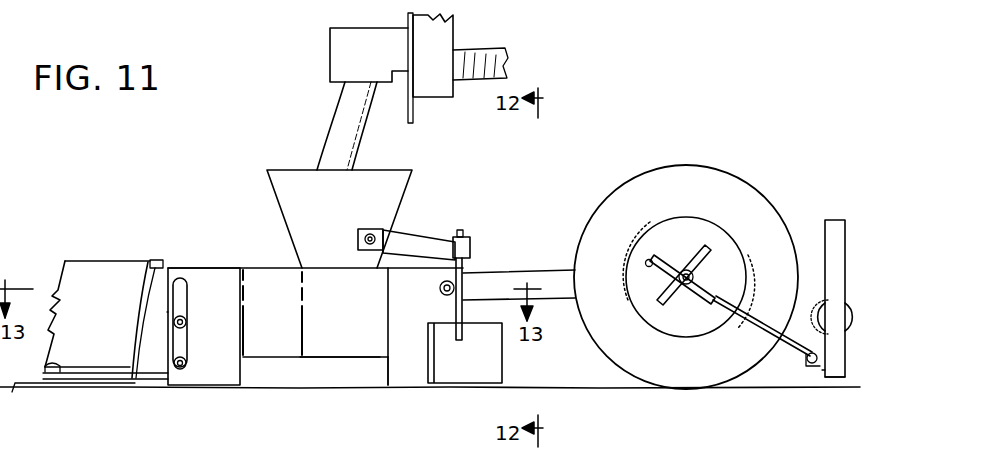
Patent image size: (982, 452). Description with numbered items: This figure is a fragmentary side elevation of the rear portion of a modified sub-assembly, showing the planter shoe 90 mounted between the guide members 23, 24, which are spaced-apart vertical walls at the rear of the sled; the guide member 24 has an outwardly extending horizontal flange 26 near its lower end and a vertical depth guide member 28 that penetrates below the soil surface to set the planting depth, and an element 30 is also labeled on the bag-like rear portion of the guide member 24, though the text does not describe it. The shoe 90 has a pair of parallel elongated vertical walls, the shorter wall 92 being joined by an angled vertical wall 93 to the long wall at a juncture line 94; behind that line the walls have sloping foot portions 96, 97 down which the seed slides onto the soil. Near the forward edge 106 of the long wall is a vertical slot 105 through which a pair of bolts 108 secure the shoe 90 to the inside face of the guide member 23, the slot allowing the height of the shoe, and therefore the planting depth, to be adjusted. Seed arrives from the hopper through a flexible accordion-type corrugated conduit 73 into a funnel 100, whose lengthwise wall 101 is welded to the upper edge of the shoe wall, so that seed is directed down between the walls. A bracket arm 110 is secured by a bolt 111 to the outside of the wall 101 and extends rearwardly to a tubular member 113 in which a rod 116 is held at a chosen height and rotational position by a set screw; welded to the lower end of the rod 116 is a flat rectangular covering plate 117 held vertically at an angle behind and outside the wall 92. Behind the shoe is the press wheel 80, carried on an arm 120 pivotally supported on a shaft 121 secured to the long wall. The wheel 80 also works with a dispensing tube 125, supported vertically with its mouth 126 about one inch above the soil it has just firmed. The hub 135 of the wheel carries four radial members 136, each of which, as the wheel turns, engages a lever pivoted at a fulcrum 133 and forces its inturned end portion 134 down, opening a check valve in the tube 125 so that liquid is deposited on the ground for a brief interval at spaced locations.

The flexible accordion-type corrugated conduit 73 is at (336, 110).
The funnel 100 is at (415, 182).
The lengthwise wall of funnel 101 is at (350, 196).
The juncture line 94 is at (240, 376).
The vertical slot 105 is at (188, 290).
The bolts 108 is at (186, 358).
The forward edge 106 is at (168, 312).
The vertical wall 93 is at (285, 315).
The vertical wall 92 is at (378, 315).
The foot portion 97 is at (262, 370).
The foot portion 96 is at (355, 375).
The shoe 90 is at (336, 358).
The guide member 24 is at (80, 266).
The bag edge 30 is at (143, 262).
The guide member 23 is at (153, 262).
The horizontal flange 26 is at (46, 365).
The vertical depth guide member 28 is at (84, 392).
The bolt 111 is at (398, 232).
The bracket arm 110 is at (426, 244).
The tubular member 113 is at (467, 246).
The rod 116 is at (467, 267).
The shaft 121 is at (441, 291).
The arm 120 is at (520, 280).
The covering plate 117 is at (498, 359).
The press wheel 80 is at (720, 158).
The radial members 136 is at (696, 262).
The hub 135 is at (700, 272).
The inturned end portion 134 is at (646, 258).
The fulcrum 133 is at (775, 345).
The dispensing tube 125 is at (835, 240).
The mouth 126 is at (834, 378).